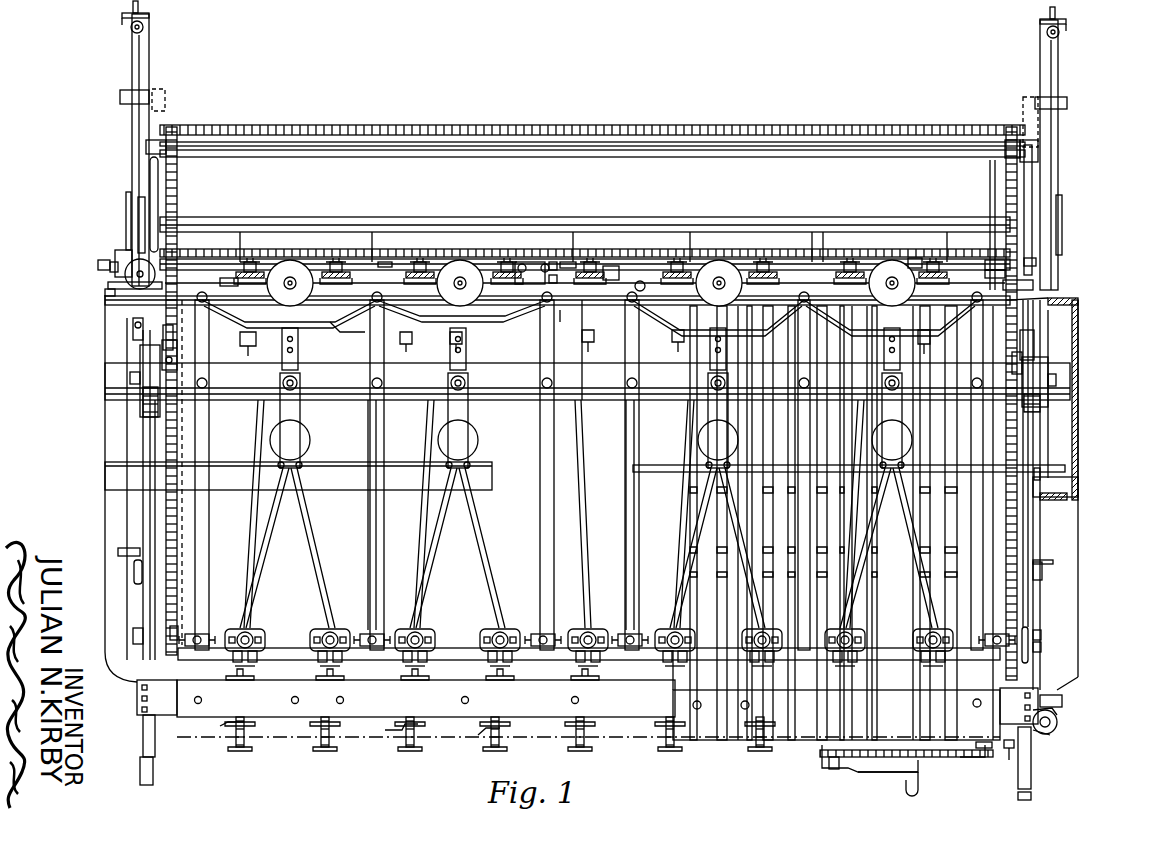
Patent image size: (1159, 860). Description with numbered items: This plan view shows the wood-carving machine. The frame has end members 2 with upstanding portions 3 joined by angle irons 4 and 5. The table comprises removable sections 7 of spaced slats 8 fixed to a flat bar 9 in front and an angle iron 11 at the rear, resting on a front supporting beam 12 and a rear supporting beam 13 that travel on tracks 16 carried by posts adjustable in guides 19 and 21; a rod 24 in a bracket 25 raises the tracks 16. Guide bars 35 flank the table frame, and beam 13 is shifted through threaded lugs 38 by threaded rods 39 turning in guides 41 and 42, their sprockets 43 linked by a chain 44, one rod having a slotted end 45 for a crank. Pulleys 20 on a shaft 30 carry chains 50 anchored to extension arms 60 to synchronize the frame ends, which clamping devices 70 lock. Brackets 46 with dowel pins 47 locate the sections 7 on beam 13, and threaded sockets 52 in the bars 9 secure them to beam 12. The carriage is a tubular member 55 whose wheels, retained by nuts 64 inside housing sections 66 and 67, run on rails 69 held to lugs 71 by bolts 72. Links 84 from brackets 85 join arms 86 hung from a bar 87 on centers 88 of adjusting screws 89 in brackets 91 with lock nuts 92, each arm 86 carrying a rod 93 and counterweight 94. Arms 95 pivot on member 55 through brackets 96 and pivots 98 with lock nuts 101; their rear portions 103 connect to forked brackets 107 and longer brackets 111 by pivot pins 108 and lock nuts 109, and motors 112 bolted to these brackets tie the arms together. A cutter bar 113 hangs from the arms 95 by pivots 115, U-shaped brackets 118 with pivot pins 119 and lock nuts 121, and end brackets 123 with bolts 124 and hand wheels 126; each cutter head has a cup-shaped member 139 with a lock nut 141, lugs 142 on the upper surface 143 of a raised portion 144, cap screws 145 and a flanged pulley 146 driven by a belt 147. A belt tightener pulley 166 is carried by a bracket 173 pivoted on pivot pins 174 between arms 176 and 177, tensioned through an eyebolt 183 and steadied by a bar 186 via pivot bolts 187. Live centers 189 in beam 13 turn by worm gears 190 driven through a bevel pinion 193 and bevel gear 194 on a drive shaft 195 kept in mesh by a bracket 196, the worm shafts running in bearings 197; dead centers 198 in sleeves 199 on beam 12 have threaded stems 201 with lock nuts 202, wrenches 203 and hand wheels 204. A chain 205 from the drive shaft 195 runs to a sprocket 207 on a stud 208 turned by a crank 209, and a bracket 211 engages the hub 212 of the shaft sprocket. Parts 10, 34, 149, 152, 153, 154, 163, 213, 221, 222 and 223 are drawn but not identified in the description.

The end member 2 is at (113, 538).
The upstanding portion 3 is at (105, 393).
The angle iron 4 is at (118, 478).
The angle iron 5 is at (125, 312).
The removable table section 7 is at (699, 748).
The slat 8 is at (733, 722).
The flat bar 9 is at (667, 706).
The frame lug 10 is at (128, 553).
The angle iron 11 is at (915, 262).
The front supporting beam 12 is at (205, 716).
The rear supporting beam 13 is at (562, 322).
The track 16 is at (140, 775).
The guide 19 is at (135, 699).
The pulley 20 is at (128, 206).
The guide 21 is at (1066, 292).
The rod 24 is at (1057, 728).
The bracket 25 is at (1058, 720).
The shaft 30 is at (788, 218).
The wheel bracket 34 is at (1056, 735).
The guide bar 35 is at (150, 156).
The threaded lug 38 is at (1025, 286).
The threaded rod 39 is at (178, 186).
The guide 41 is at (160, 688).
The guide 42 is at (165, 141).
The sprocket 43 is at (1005, 132).
The chain 44 is at (736, 126).
The slotted end 45 is at (1010, 748).
The bracket 46 is at (236, 292).
The tapered dowel pin 47 is at (268, 296).
The chain 50 is at (132, 50).
The threaded socket 52 is at (695, 708).
The tubular member 55 is at (585, 400).
The extension arm 60 is at (150, 51).
The nut 64 is at (135, 377).
The outer housing section 66 is at (140, 352).
The inner housing section 67 is at (145, 405).
The rail 69 is at (148, 447).
The clamping device 70 is at (160, 643).
The lug 71 is at (1052, 482).
The bolt 72 is at (1040, 472).
The link 84 is at (172, 330).
The bracket 85 is at (163, 362).
The arm 86 is at (178, 243).
The bar 87 is at (385, 262).
The center 88 is at (124, 258).
The adjusting screw 89 is at (100, 265).
The bracket 91 is at (118, 280).
The lock nut 92 is at (118, 266).
The rod 93 is at (150, 287).
The counterweight 94 is at (118, 300).
The arm 95 is at (204, 568).
The bracket 96 is at (215, 401).
The pivot 98 is at (378, 401).
The lock nut 101 is at (368, 404).
The rearwardly extending portion 103 is at (212, 342).
The forked bracket 107 is at (298, 322).
The pivot pin 108 is at (545, 301).
The lock nut 109 is at (641, 282).
The longer bracket 111 is at (340, 324).
The motor 112 is at (292, 262).
The cutter bar 113 is at (303, 717).
The pivot 115 is at (196, 630).
The U-shaped bracket 118 is at (384, 628).
The pivot pin 119 is at (365, 633).
The lock nut 121 is at (553, 638).
The U-shaped bracket 123 is at (208, 636).
The bolt 124 is at (212, 647).
The hand wheel 126 is at (170, 631).
The cup-shaped member 139 is at (592, 630).
The lock nut 141 is at (440, 605).
The lug 142 is at (316, 632).
The upper surface 143 is at (342, 605).
The raised portion 144 is at (254, 631).
The cap screw 145 is at (430, 628).
The flanged pulley 146 is at (265, 575).
The belt 147 is at (302, 518).
The rod 149 is at (268, 600).
The foot 152 is at (252, 658).
The foot 153 is at (345, 658).
The foot 154 is at (582, 662).
The tab 163 is at (250, 663).
The belt tightener pulley 166 is at (308, 444).
The bracket 173 is at (285, 435).
The pivot pin 174 is at (297, 383).
The arm 176 is at (368, 392).
The lower leg 177 is at (297, 352).
The eyebolt 183 is at (293, 342).
The bar 186 is at (535, 471).
The pivot bolt 187 is at (715, 470).
The live center 189 is at (243, 346).
The worm gear 190 is at (336, 260).
The bevel pinion 193 is at (1010, 272).
The bevel gear 194 is at (1005, 262).
The drive shaft 195 is at (985, 165).
The bracket 196 is at (1030, 260).
The bearing 197 is at (227, 277).
The dead center 198 is at (245, 677).
The sleeve 199 is at (400, 680).
The threaded stem 201 is at (232, 736).
The lock nut 202 is at (495, 736).
The hand lever 203 is at (392, 736).
The hand wheel 204 is at (330, 752).
The chain 205 is at (870, 758).
The sprocket 207 is at (822, 760).
The stud 208 is at (834, 770).
The crank 209 is at (900, 774).
The bracket 211 is at (977, 760).
The hub 212 is at (983, 760).
The valve 213 is at (528, 262).
The fitting 221 is at (553, 262).
The fitting 222 is at (560, 274).
The fitting 223 is at (580, 262).